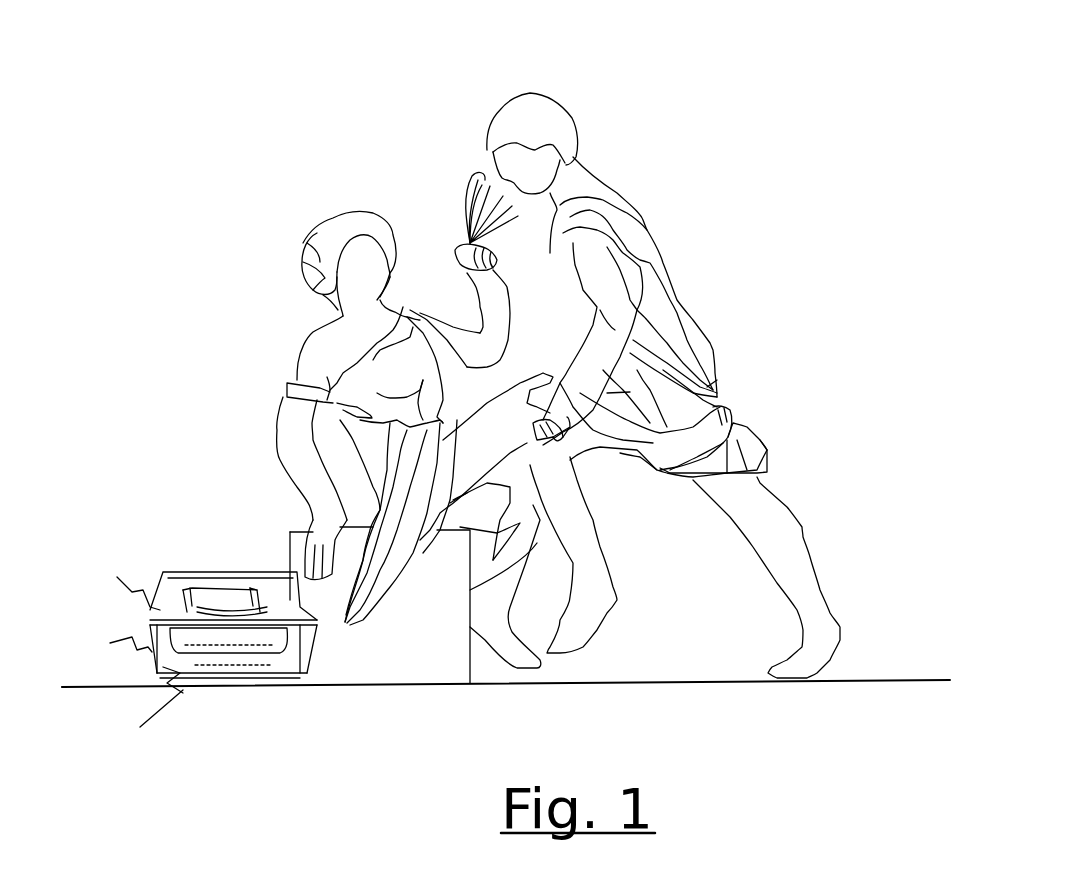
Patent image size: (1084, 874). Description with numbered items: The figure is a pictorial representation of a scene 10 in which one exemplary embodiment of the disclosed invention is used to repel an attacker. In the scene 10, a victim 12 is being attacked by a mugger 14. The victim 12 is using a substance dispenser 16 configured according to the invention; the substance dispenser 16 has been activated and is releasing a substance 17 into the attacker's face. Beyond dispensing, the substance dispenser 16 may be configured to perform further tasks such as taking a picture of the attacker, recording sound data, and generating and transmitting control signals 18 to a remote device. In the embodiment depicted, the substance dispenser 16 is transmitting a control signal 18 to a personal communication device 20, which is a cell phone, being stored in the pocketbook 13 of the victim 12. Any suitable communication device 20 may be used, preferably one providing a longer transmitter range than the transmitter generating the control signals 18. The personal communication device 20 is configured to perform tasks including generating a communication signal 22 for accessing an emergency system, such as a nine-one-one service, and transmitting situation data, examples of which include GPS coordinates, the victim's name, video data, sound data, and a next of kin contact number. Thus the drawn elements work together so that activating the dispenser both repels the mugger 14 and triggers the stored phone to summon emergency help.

The scene 10 is at (253, 203).
The victim 12 is at (303, 360).
The pocketbook 13 is at (247, 570).
The mugger 14 is at (780, 537).
The substance dispenser 16 is at (456, 234).
The substance 17 is at (462, 180).
The control signals 18 is at (425, 292).
The personal communication device 20 is at (233, 670).
The communication signal 22 is at (182, 565).